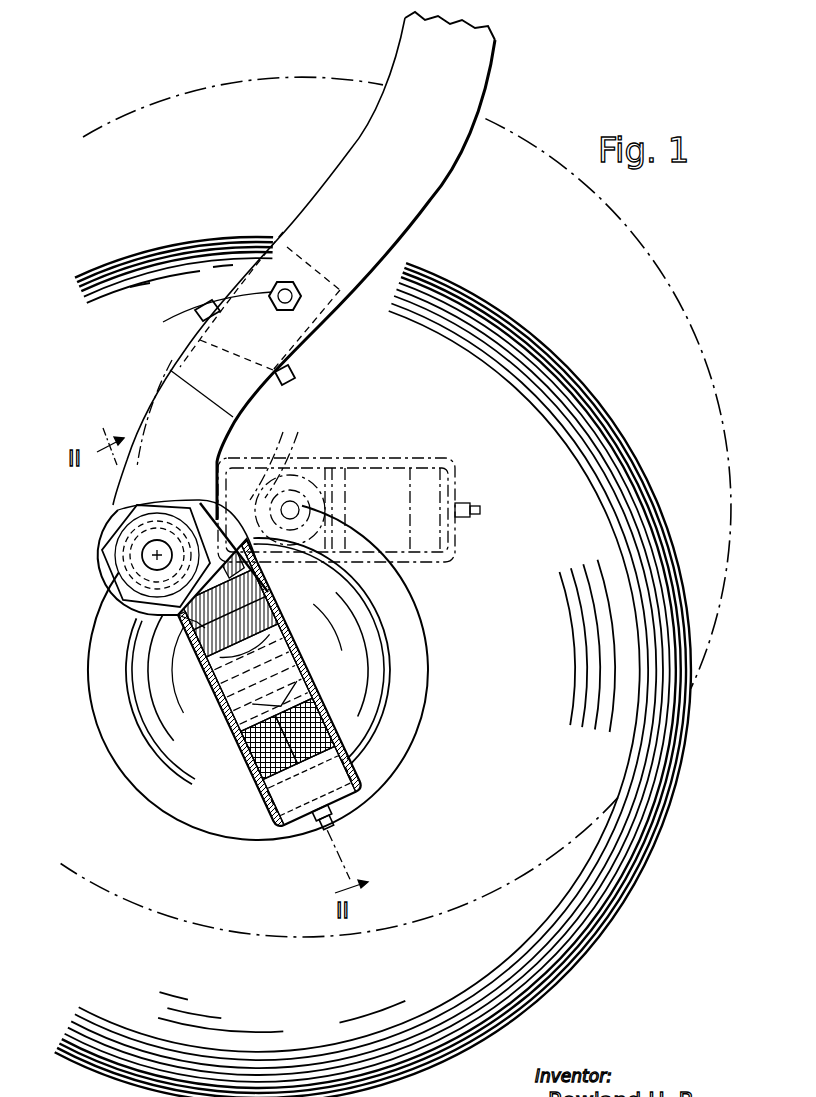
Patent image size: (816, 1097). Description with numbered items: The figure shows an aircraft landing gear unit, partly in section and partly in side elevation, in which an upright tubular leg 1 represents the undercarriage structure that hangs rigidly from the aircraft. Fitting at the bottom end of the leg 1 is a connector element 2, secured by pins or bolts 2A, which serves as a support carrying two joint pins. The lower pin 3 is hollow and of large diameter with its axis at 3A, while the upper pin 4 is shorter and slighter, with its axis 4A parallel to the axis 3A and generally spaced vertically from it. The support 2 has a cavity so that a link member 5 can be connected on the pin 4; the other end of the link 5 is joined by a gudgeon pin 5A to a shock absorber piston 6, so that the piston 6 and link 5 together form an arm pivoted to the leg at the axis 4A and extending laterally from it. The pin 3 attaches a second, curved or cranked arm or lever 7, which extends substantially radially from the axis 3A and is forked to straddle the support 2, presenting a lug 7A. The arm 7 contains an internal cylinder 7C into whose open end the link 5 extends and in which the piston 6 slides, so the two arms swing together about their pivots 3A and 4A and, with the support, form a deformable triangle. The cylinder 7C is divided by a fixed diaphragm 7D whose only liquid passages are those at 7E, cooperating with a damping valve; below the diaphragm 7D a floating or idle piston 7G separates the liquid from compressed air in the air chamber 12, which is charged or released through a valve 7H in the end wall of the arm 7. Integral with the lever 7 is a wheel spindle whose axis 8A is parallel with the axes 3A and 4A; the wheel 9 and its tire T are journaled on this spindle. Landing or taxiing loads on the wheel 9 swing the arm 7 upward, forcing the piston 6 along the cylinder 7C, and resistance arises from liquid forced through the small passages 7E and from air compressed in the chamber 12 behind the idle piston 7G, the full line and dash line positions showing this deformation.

The leg 1 is at (418, 199).
The connector element 2 is at (163, 391).
The pins or bolts 2A is at (200, 316).
The lower pin 3 is at (138, 526).
The axis of lower pin 3A is at (154, 555).
The upper pin 4 is at (221, 470).
The axis of upper pin 4A is at (188, 500).
The link member 5 is at (274, 472).
The gudgeon pin 5A is at (207, 626).
The shock absorber piston 6 is at (240, 633).
The arm or lever 7 is at (283, 651).
The lug 7A is at (118, 574).
The internal cylinder 7C is at (250, 695).
The fixed diaphragm 7D is at (230, 723).
The liquid passages 7E is at (271, 738).
The floating or idle piston 7G is at (302, 738).
The valve 7H is at (338, 824).
The spindle axis 8A is at (310, 676).
The wheel 9 is at (356, 708).
The air chamber 12 is at (360, 781).
The tire T is at (697, 680).